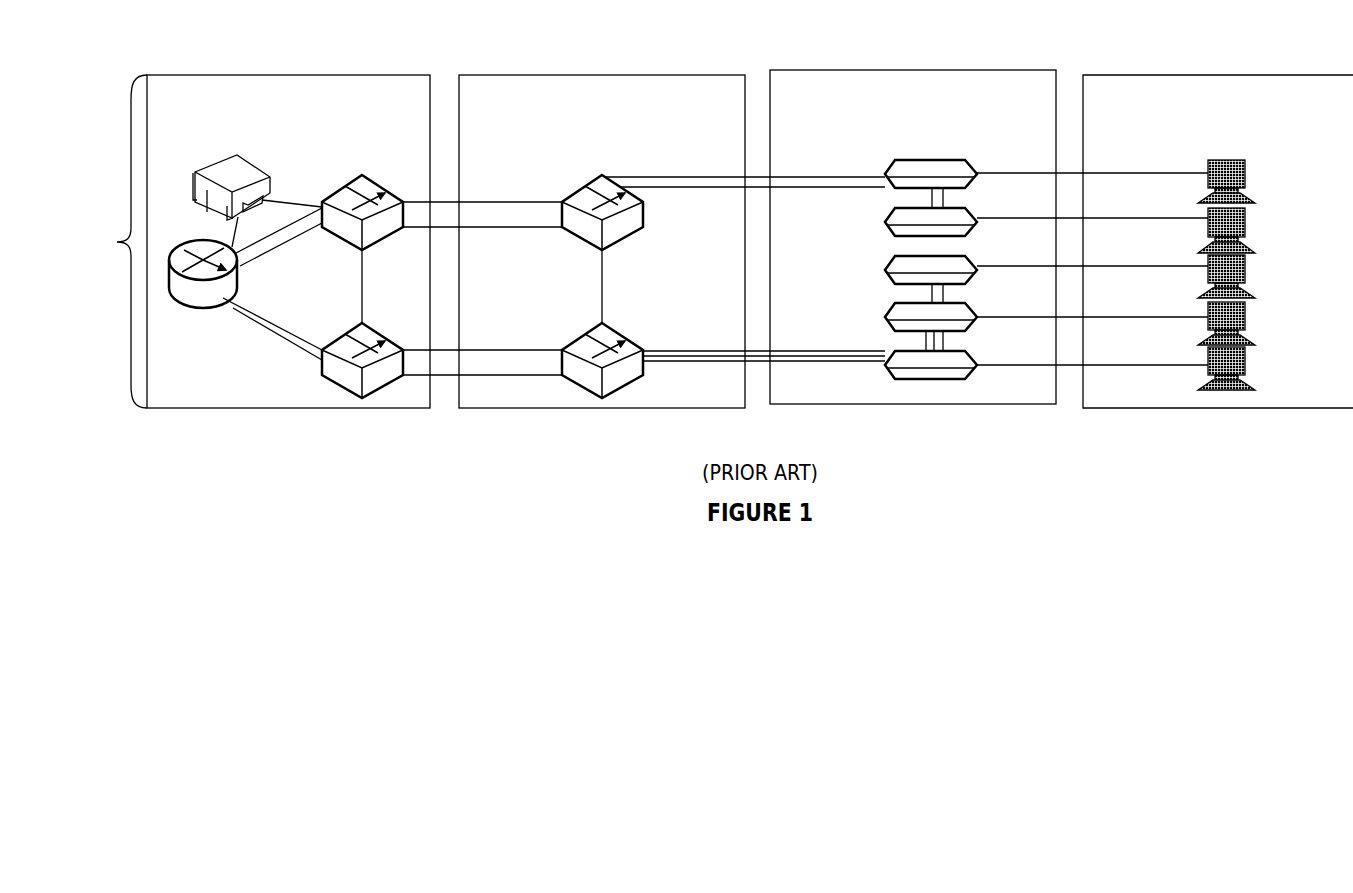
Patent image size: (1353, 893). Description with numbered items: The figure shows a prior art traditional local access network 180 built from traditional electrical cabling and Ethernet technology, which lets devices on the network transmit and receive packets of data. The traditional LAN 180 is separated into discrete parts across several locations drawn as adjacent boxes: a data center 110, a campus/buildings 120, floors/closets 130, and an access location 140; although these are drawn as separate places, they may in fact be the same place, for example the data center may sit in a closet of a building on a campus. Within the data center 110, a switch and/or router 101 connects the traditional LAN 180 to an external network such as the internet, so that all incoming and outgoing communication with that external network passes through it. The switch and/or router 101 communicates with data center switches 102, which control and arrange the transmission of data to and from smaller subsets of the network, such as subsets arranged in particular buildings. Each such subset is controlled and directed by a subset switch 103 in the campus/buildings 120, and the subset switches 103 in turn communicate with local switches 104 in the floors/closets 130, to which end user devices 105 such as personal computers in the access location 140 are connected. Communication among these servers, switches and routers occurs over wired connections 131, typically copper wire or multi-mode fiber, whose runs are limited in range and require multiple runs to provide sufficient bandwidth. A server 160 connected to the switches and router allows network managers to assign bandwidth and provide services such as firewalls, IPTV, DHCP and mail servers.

The switch and/or router 101 is at (203, 275).
The data center switches 102 is at (356, 322).
The subset switch 103 is at (575, 335).
The local switches 104 is at (880, 271).
The end user devices 105 is at (1255, 178).
The data center 110 is at (288, 241).
The campus/buildings 120 is at (602, 241).
The floors/closets 130 is at (913, 237).
The wired connections 131 is at (260, 337).
The access location 140 is at (1218, 241).
The server 160 is at (228, 160).
The traditional local access network 180 is at (108, 241).